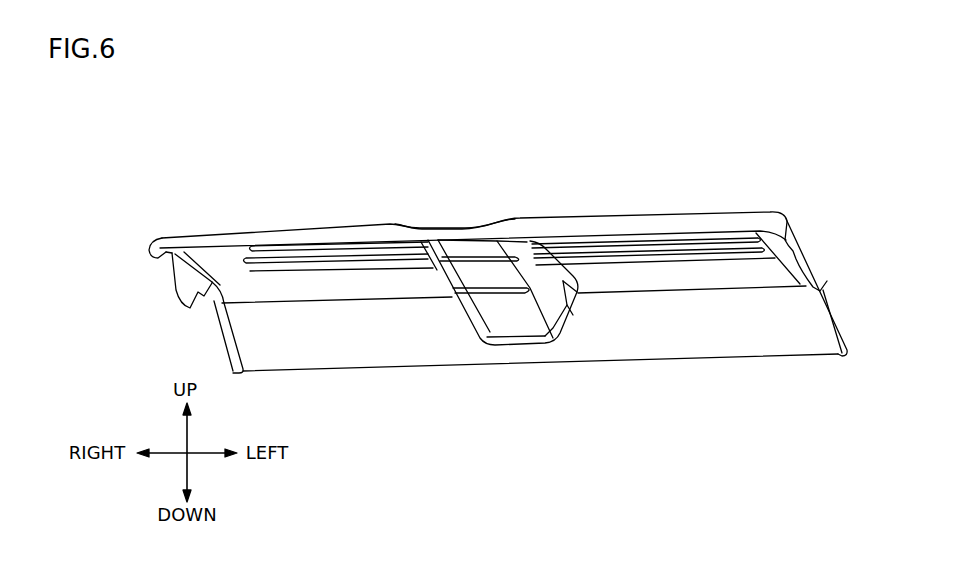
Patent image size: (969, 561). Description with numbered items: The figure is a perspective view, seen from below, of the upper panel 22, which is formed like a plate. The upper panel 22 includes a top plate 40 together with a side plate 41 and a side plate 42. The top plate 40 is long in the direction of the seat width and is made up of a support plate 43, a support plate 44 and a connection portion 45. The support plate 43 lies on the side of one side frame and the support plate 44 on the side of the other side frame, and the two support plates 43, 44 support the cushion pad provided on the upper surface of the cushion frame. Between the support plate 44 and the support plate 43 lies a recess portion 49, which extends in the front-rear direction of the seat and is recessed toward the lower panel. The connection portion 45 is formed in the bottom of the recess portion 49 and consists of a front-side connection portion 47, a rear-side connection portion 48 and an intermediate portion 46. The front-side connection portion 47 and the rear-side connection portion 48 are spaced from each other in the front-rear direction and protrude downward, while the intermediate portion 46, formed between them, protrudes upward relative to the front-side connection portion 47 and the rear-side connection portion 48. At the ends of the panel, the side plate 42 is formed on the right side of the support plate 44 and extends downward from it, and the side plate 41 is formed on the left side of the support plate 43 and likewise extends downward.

The upper panel 22 is at (502, 104).
The top plate 40 is at (556, 217).
The side plate 41 is at (808, 262).
The side plate 42 is at (180, 292).
The support plate 43 is at (656, 214).
The support plate 44 is at (297, 228).
The connection portion 45 is at (435, 468).
The intermediate portion 46 is at (475, 278).
The front-side connection portion 47 is at (452, 251).
The rear-side connection portion 48 is at (515, 325).
The recess portion 49 is at (451, 226).